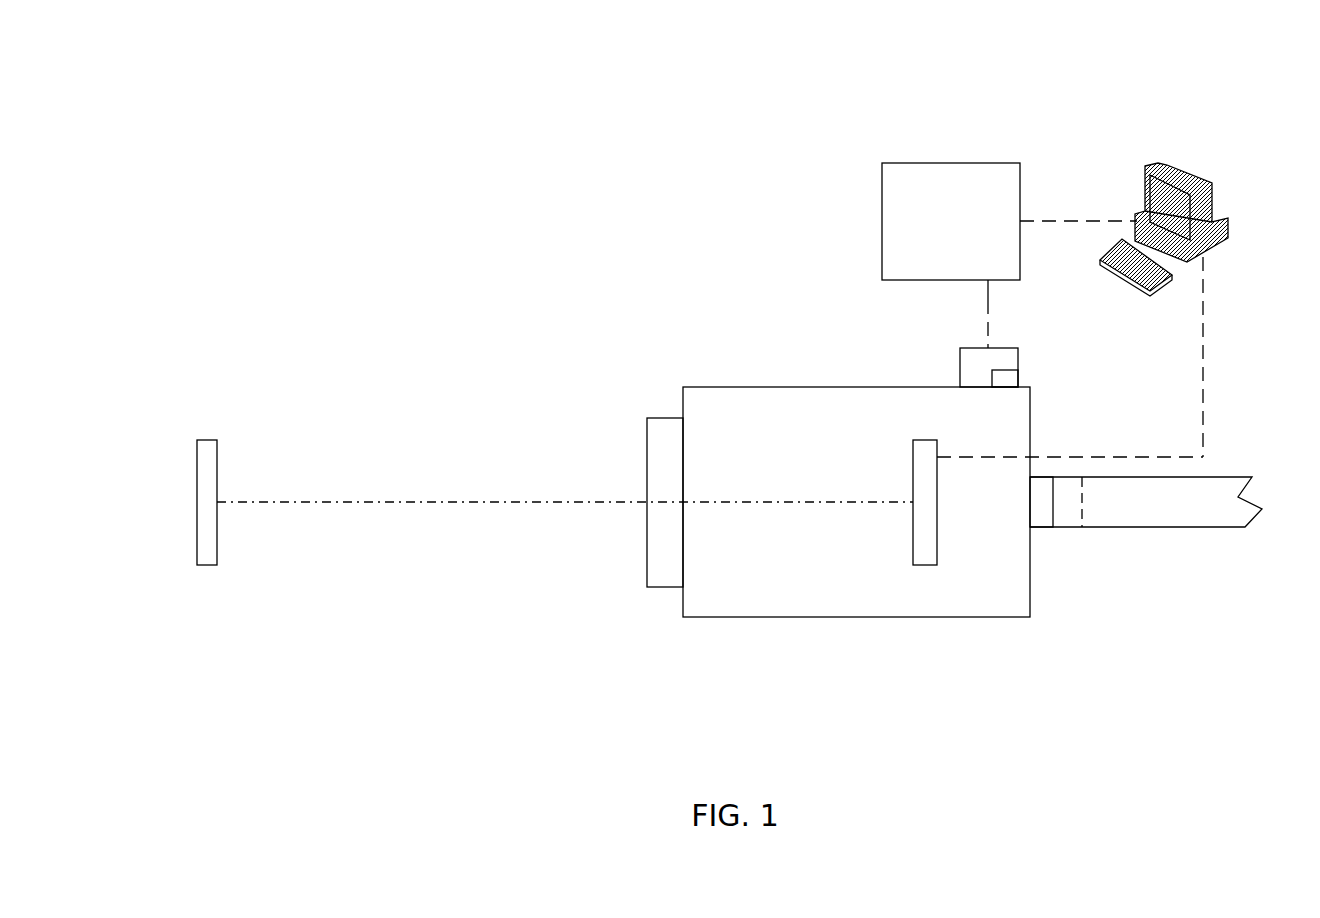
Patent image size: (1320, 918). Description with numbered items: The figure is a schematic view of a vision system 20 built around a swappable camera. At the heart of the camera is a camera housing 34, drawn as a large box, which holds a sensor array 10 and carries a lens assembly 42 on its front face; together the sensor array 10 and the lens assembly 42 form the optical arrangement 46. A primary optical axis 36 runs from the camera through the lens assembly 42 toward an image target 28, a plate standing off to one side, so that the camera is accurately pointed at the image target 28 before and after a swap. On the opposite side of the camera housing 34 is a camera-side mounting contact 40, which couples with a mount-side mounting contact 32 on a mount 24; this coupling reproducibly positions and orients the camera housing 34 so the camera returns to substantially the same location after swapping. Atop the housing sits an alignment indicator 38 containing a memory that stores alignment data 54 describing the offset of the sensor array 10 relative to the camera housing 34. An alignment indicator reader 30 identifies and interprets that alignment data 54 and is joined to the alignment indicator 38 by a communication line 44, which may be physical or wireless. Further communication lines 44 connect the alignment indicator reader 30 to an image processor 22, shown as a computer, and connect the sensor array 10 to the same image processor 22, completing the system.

The sensor array 10 is at (917, 522).
The vision system 20 is at (652, 118).
The image processor 22 is at (1165, 165).
The mount 24 is at (1217, 476).
The image target 28 is at (207, 437).
The alignment indicator reader 30 is at (910, 162).
The mount-side mounting contact 32 is at (1068, 495).
The camera housing 34 is at (725, 386).
The primary optical axis 36 is at (486, 499).
The alignment indicator 38 is at (997, 348).
The camera-side mounting contact 40 is at (1040, 528).
The lens assembly 42 is at (665, 588).
The communication line 44 is at (1048, 220).
The optical arrangement 46 is at (797, 687).
The alignment data 54 is at (1003, 371).